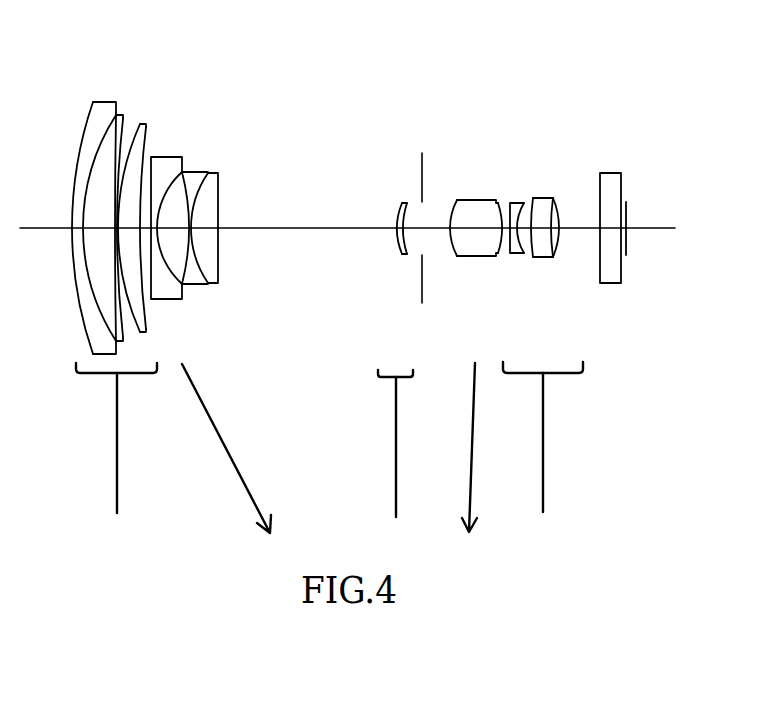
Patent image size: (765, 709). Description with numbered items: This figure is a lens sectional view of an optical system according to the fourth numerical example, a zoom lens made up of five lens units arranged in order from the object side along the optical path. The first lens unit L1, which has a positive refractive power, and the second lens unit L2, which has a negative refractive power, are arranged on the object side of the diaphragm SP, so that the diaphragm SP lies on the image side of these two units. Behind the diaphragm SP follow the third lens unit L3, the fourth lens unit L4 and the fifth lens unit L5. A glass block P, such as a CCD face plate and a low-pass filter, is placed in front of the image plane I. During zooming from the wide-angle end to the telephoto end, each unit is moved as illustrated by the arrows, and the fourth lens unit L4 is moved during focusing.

The first lens unit L1 is at (138, 93).
The second lens unit L2 is at (151, 93).
The third lens unit L3 is at (422, 93).
The fourth lens unit L4 is at (452, 93).
The fifth lens unit L5 is at (511, 93).
The diaphragm SP is at (420, 250).
The glass block P is at (621, 93).
The image plane I is at (627, 213).